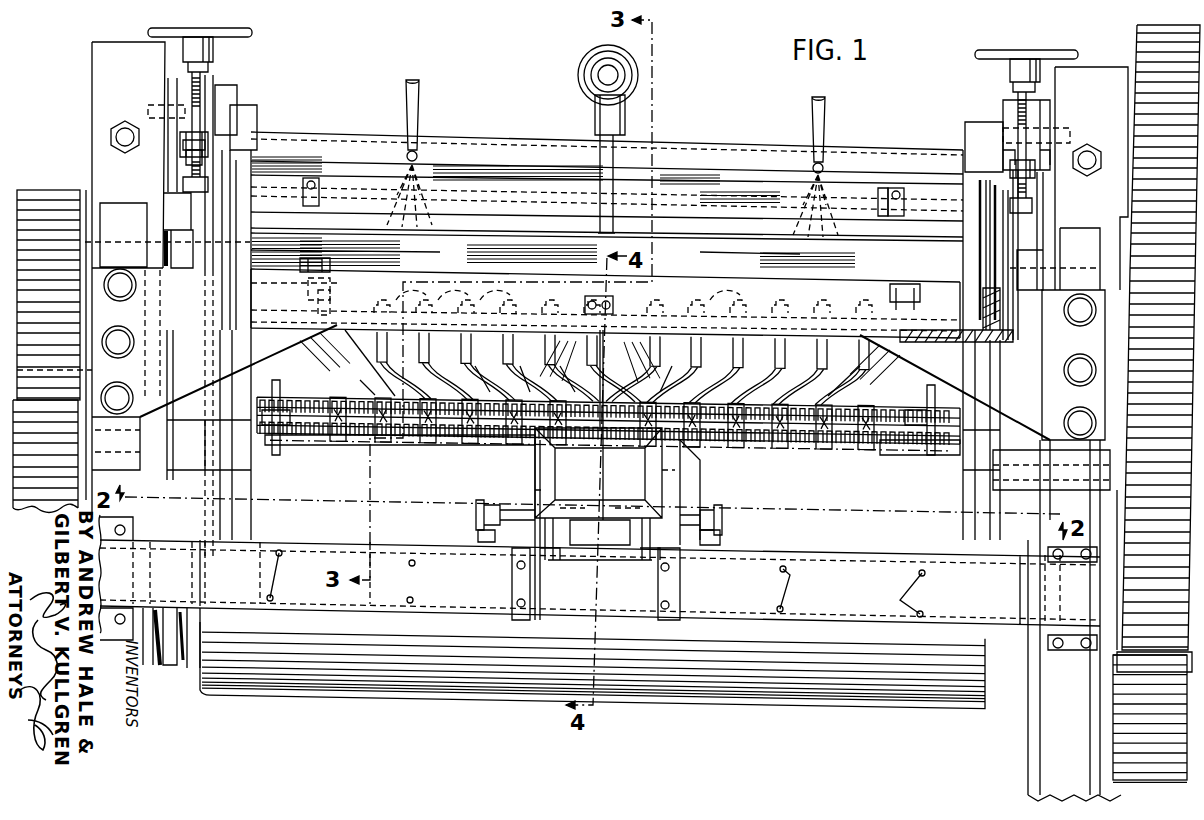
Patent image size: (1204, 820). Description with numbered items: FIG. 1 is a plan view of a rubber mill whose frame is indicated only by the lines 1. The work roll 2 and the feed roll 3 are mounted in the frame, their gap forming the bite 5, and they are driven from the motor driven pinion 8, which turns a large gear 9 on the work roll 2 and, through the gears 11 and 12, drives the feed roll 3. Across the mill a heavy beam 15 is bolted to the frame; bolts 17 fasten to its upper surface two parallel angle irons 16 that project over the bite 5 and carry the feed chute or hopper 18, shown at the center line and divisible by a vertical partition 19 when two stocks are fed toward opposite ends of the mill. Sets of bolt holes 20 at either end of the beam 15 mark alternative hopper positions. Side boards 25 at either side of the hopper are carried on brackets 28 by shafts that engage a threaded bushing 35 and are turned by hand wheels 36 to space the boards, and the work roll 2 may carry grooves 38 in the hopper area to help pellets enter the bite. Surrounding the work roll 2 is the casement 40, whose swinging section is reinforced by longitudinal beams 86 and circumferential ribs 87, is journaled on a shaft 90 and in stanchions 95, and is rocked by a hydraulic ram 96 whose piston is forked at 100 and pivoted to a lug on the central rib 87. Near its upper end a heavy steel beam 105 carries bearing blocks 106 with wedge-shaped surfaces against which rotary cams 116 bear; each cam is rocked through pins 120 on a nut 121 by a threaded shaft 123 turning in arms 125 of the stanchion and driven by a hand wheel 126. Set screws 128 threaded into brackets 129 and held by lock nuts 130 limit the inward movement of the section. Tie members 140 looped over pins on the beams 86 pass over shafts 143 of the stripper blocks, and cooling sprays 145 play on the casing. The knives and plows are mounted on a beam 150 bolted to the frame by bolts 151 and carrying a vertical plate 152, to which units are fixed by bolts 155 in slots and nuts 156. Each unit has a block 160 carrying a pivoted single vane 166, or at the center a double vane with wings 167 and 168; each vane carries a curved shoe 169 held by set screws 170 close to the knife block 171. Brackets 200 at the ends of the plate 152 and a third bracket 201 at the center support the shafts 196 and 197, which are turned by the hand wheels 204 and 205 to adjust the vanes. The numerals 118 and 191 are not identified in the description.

The frame 1 is at (120, 48).
The work roll 2 is at (235, 387).
The feed roll 3 is at (195, 530).
The bite 5 is at (820, 465).
The motor driven pinion 8 is at (1150, 770).
The large gear 9 is at (1139, 34).
The gear 11 is at (66, 190).
The gear 12 is at (52, 505).
The heavy beam 15 is at (894, 550).
The parallel angle irons 16 is at (675, 500).
The bolts 17 is at (520, 603).
The feed chute or hopper 18 is at (690, 488).
The vertical partition 19 is at (594, 481).
The bolt holes 20 is at (275, 556).
The side boards 25 is at (672, 470).
The brackets 28 is at (478, 536).
The threaded bushing 35 is at (628, 548).
The hand wheels 36 is at (478, 512).
The grooves 38 is at (637, 327).
The casement 40 is at (710, 138).
The longitudinal beams 86 is at (762, 196).
The circumferential ribs 87 is at (251, 212).
The shaft 90 is at (615, 135).
The stanchions 95 is at (217, 80).
The hydraulic ram 96 is at (580, 76).
The forked end of piston 100 is at (640, 116).
The heavy steel beam 105 is at (325, 137).
The bearing blocks 106 is at (258, 118).
The rotary cam 116 is at (236, 92).
The nut 118 is at (180, 132).
The pins 120 is at (186, 147).
The nut 121 is at (188, 158).
The threaded shaft 123 is at (195, 98).
The arms 125 is at (212, 52).
The hand wheel 126 is at (243, 32).
The set screws 128 is at (340, 268).
The brackets 129 is at (330, 296).
The lock nuts 130 is at (308, 288).
The tie member 140 is at (894, 194).
The shaft 143 is at (300, 185).
The cooling sprays 145 is at (420, 106).
The beam 150 is at (737, 272).
The bolts 151 is at (140, 287).
The vertical plate 152 is at (938, 340).
The bolts 155 is at (498, 319).
The nuts 156 is at (436, 317).
The block 160 is at (387, 355).
The single vanes 166 is at (775, 357).
The wing of double vane 167 is at (540, 445).
The wing of double vane 168 is at (617, 425).
The curved plow or shoe 169 is at (360, 380).
The set screws 170 is at (710, 320).
The knife block 171 is at (686, 357).
The plate 191 is at (440, 440).
The shaft 196 is at (858, 380).
The shaft 197 is at (898, 462).
The bracket 200 is at (357, 360).
The third bracket 201 is at (592, 312).
The hand wheel 204 is at (935, 405).
The hand wheel 205 is at (275, 455).